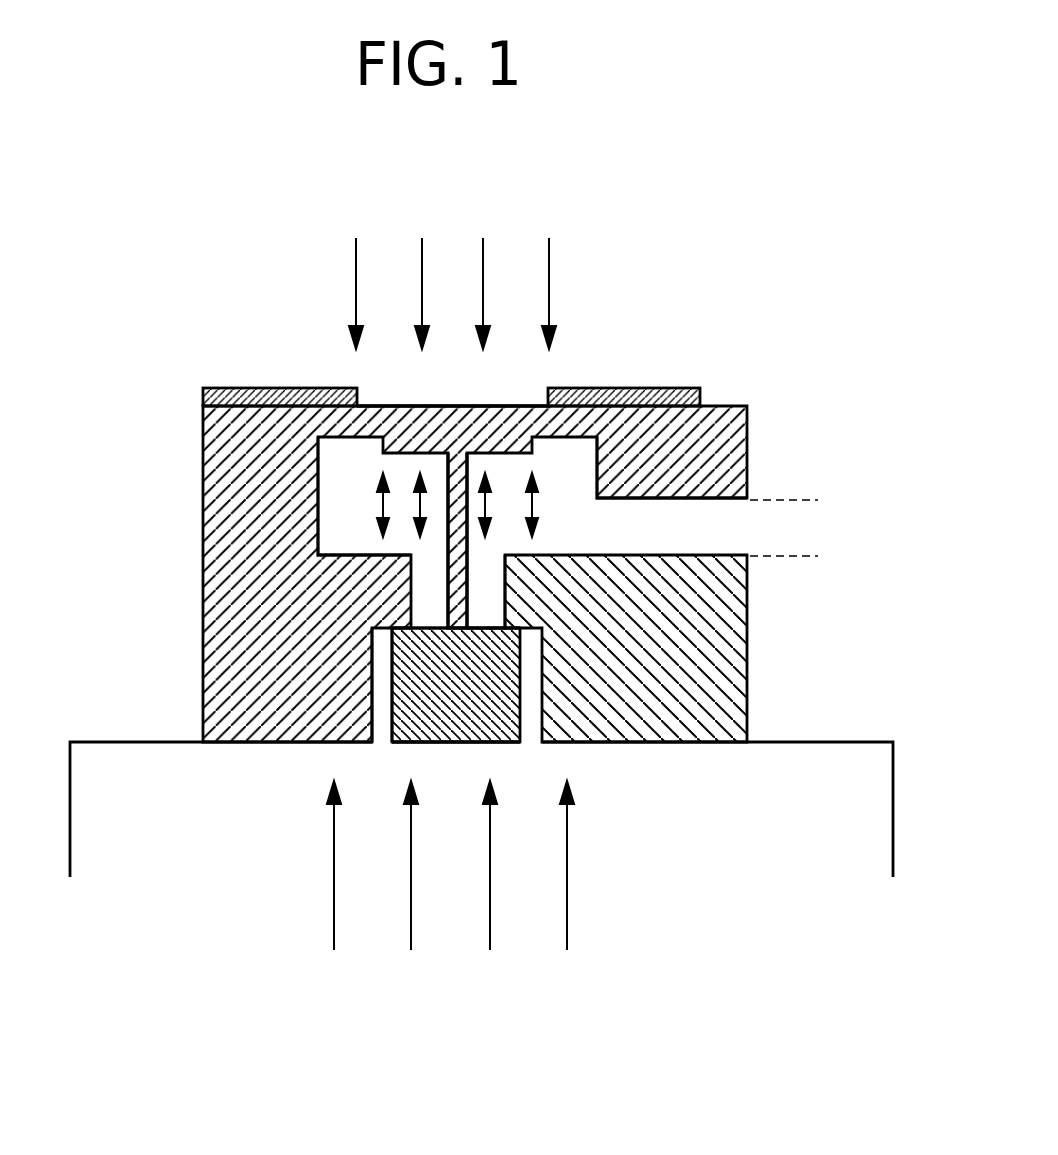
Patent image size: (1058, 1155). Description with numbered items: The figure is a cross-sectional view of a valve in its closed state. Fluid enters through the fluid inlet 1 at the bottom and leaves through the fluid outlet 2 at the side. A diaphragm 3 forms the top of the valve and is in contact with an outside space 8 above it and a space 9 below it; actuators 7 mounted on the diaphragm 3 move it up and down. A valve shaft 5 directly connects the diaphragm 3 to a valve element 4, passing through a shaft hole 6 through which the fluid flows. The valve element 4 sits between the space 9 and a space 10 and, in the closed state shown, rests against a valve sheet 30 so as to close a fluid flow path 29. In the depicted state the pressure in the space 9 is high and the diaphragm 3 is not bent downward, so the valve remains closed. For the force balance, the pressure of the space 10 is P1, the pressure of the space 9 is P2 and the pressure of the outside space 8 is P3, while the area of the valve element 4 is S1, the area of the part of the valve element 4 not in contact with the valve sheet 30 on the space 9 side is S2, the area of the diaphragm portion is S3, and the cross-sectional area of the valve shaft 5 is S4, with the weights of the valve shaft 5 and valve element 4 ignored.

The fluid inlet 1 is at (382, 740).
The fluid outlet 2 is at (808, 529).
The diaphragm 3 is at (343, 415).
The valve element 4 is at (443, 690).
The valve shaft 5 is at (453, 583).
The shaft hole 6 is at (483, 597).
The actuators 7 is at (215, 398).
The outside space 8 is at (343, 293).
The space 9 is at (333, 512).
The space 10 is at (481, 818).
The fluid flow path 29 is at (567, 487).
The valve sheet 30 is at (672, 704).
The area of the valve element S1 is at (470, 745).
The area of the valve element not in contact with the valve sheet S2 is at (420, 630).
The area of the diaphragm portion S3 is at (573, 415).
The cross-sectional area of the valve shaft S4 is at (447, 605).
The pressure of the space 10 P1 is at (576, 861).
The pressure of the space 9 P2 is at (489, 512).
The pressure of the outside space 8 P3 is at (688, 312).